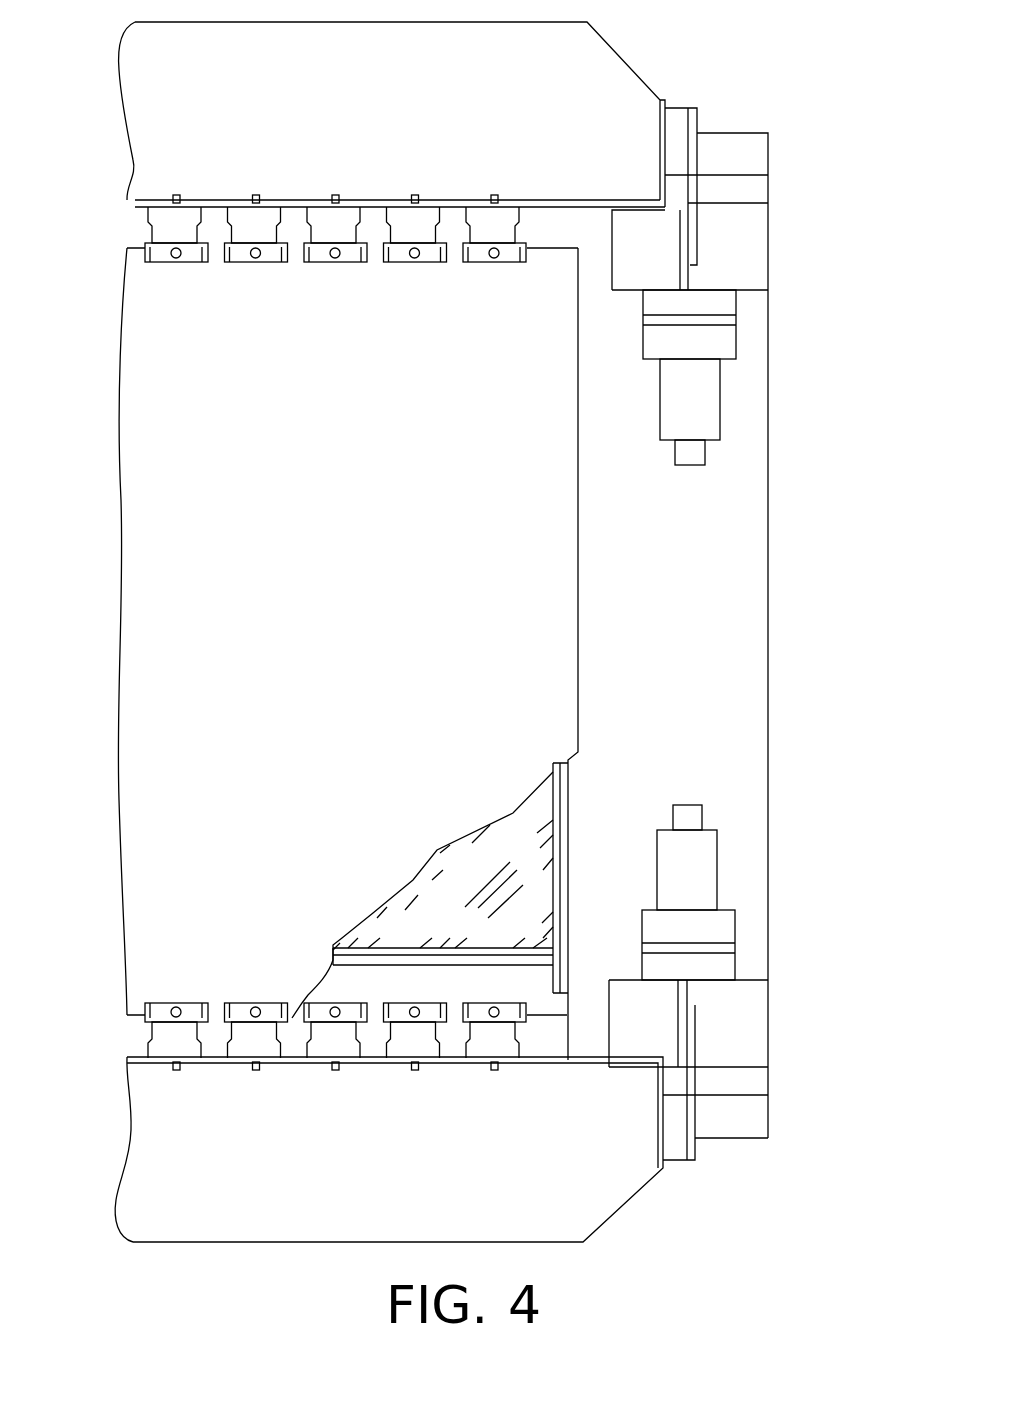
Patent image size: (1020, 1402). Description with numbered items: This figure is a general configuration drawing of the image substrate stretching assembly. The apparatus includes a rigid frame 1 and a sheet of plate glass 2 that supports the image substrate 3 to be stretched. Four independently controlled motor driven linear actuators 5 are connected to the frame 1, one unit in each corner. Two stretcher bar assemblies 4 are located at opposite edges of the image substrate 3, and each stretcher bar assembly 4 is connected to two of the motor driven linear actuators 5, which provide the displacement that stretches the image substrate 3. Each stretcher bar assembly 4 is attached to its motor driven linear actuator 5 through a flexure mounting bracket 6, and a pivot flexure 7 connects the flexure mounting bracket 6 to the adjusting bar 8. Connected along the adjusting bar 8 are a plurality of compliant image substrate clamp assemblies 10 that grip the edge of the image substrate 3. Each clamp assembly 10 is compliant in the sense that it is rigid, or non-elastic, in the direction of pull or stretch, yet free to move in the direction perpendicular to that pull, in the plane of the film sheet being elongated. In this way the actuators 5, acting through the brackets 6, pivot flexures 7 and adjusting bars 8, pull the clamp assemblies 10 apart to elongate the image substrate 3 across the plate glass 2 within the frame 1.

The rigid frame 1 is at (570, 800).
The sheet of plate glass 2 is at (523, 816).
The image substrate 3 is at (577, 693).
The stretcher bar assembly 4 is at (675, 73).
The motor driven linear actuator 5 is at (737, 305).
The flexure mounting bracket 6 is at (763, 265).
The pivot flexure 7 is at (693, 188).
The adjusting bar 8 is at (614, 62).
The compliant image substrate clamp assembly 10 is at (266, 260).